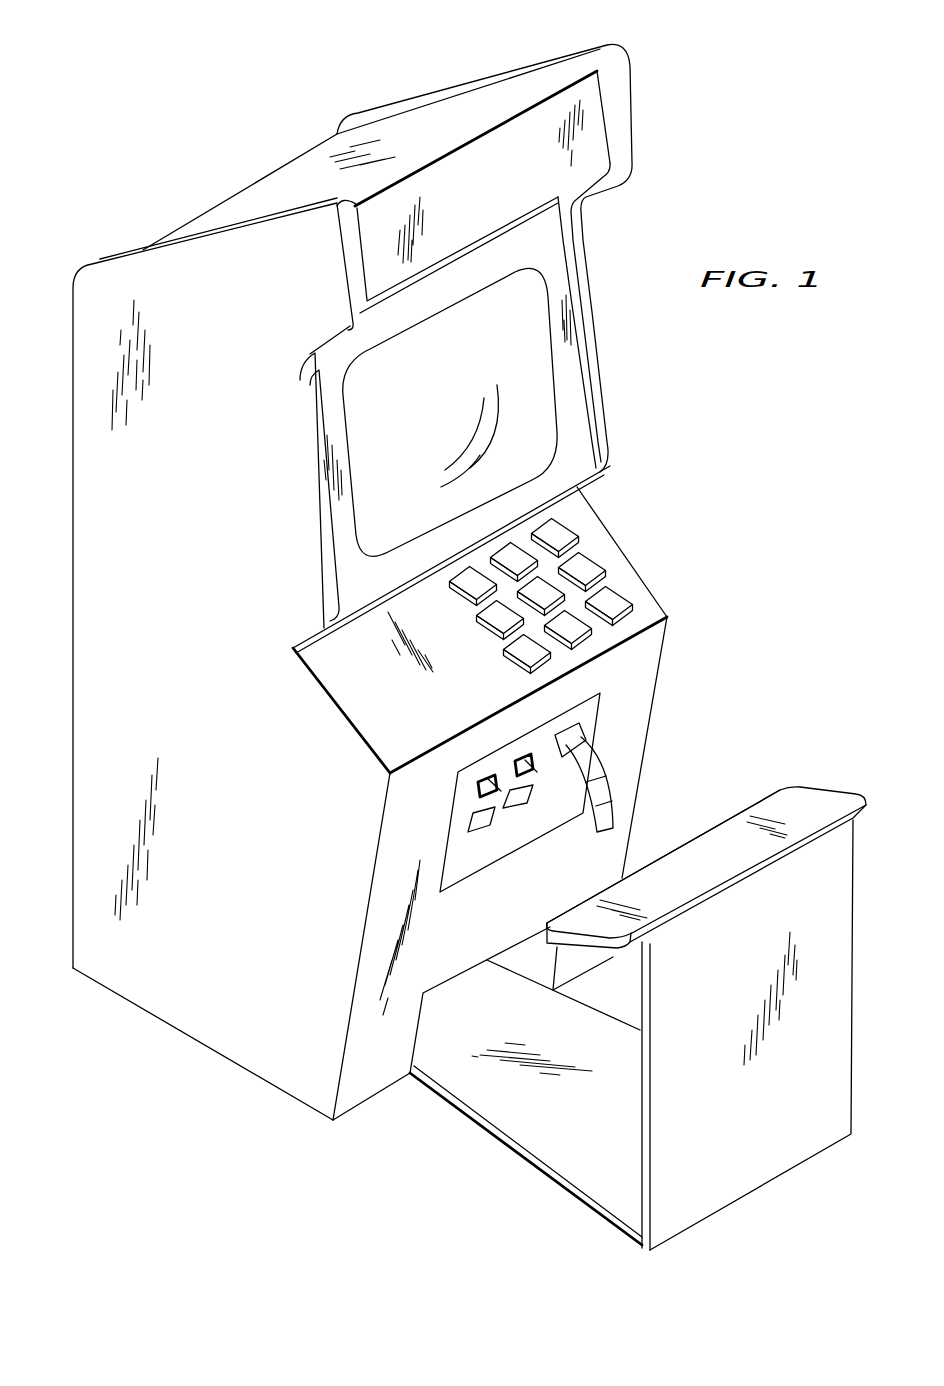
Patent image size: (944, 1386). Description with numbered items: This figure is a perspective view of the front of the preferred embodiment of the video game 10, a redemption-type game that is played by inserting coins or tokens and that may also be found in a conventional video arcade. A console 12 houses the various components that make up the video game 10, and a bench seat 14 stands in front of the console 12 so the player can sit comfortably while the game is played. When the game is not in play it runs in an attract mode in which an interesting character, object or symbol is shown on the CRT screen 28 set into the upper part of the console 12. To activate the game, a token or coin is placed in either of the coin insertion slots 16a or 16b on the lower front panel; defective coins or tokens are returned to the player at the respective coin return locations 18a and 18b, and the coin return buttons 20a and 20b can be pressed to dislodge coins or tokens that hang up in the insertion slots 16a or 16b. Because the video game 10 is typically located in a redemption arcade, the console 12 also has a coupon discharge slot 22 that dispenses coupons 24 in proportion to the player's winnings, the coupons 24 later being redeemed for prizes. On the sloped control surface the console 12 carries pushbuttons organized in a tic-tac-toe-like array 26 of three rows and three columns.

The video game 10 is at (686, 83).
The console 12 is at (210, 456).
The bench seat 14 is at (722, 872).
The coin insertion slot 16a is at (477, 790).
The coin insertion slot 16b is at (514, 777).
The coin return location 18a is at (478, 834).
The coin return location 18b is at (523, 809).
The coin return button 20a is at (493, 784).
The coin return button 20b is at (526, 760).
The coupon discharge slot 22 is at (574, 733).
The coupons 24 is at (608, 810).
The tic-tac-toe-like array 26 is at (607, 492).
The CRT screen 28 is at (424, 444).